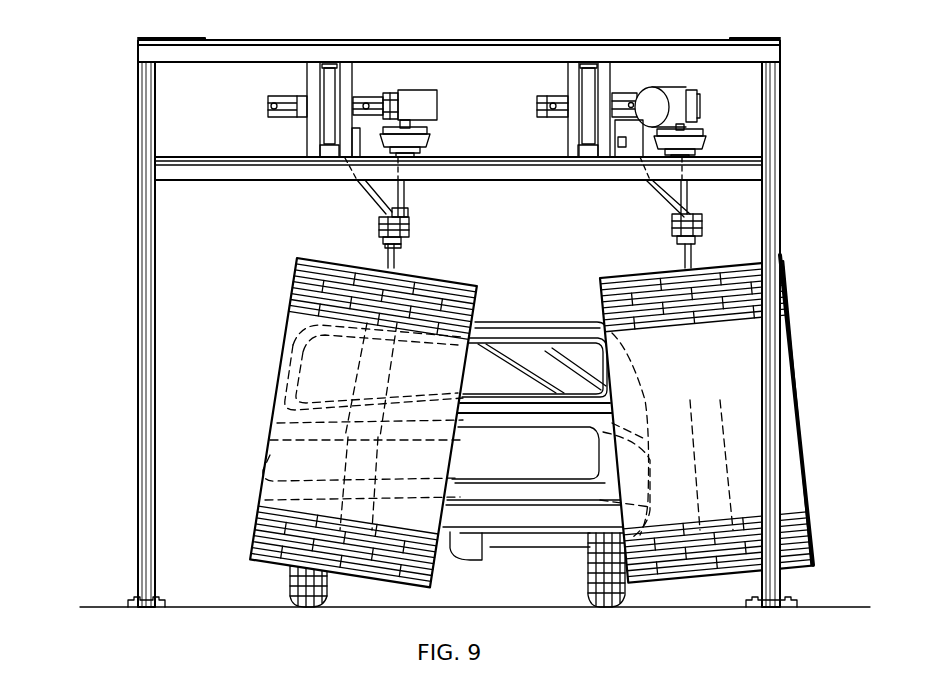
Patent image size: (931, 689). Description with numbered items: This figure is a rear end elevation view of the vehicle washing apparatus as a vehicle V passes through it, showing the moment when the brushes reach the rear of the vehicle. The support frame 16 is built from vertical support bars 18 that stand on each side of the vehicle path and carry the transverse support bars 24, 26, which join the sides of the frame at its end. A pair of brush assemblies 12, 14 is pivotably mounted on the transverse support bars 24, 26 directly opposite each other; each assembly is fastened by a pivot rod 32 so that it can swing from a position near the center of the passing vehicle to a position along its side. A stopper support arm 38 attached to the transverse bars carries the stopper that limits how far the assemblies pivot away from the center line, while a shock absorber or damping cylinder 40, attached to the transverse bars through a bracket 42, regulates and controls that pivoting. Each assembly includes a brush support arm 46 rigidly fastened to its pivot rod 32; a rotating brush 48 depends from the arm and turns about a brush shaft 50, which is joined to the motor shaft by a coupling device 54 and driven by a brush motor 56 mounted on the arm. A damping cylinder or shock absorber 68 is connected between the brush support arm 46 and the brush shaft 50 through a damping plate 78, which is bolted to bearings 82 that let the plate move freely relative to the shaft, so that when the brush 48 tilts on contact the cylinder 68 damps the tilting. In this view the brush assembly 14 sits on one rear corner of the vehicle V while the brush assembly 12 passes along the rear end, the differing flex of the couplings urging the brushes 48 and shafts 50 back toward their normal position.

The brush assembly 12 is at (292, 283).
The brush assembly 14 is at (637, 294).
The support frame 16 is at (139, 93).
The vertical support bars 18 is at (146, 292).
The transverse support bar 24 is at (564, 42).
The transverse support bar 26 is at (216, 155).
The pivot rod 32 is at (322, 128).
The stopper support arm 38 is at (287, 99).
The shock absorber or damping cylinder 40 is at (396, 96).
The bracket 42 is at (380, 93).
The brush support arm 46 is at (438, 100).
The rotating brush 48 is at (456, 283).
The brush shaft 50 is at (386, 252).
The coupling device 54 is at (430, 140).
The brush motor 56 is at (672, 90).
The damping cylinder or shock absorber 68 is at (356, 195).
The damping plate 78 is at (413, 229).
The bearings 82 is at (402, 212).
The vehicle V is at (513, 323).